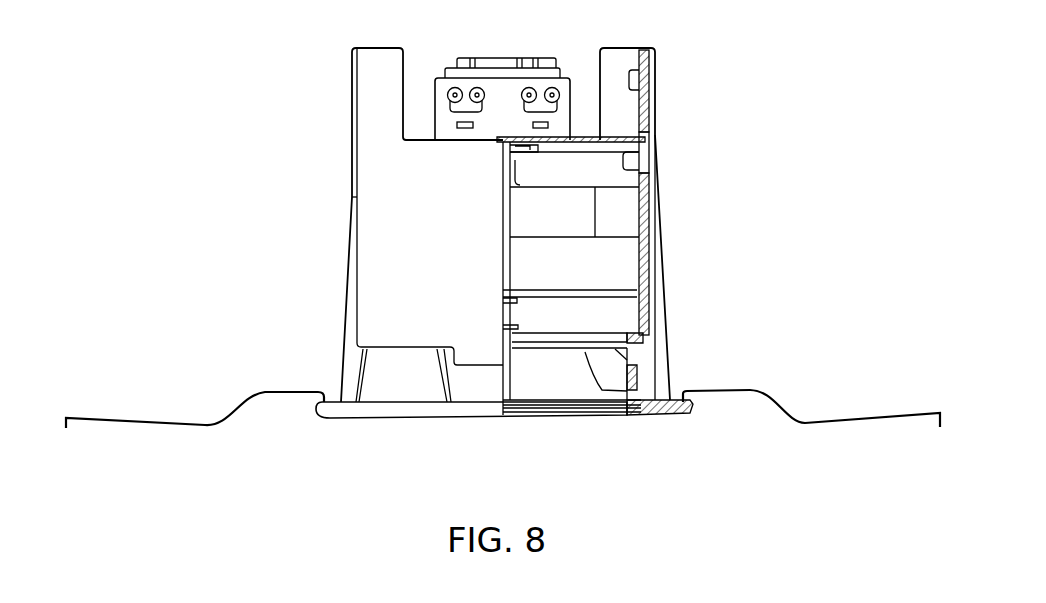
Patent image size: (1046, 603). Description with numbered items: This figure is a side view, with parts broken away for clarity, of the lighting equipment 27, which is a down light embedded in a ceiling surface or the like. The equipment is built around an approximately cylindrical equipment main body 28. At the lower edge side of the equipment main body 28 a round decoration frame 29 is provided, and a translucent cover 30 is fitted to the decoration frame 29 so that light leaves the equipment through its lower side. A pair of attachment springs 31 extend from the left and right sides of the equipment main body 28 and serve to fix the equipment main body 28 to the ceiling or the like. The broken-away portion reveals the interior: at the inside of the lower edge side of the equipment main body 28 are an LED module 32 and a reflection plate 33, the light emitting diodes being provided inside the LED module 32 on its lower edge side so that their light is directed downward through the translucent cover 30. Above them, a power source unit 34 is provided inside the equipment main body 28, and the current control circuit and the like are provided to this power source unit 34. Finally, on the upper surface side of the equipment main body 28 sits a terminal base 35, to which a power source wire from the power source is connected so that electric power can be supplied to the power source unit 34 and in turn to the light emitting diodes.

The lighting equipment 27 is at (720, 84).
The equipment main body 28 is at (352, 163).
The decoration frame 29 is at (431, 414).
The translucent cover 30 is at (541, 414).
The attachment springs 31 is at (137, 418).
The LED module 32 is at (630, 371).
The reflection plate 33 is at (564, 390).
The power source unit 34 is at (625, 263).
The terminal base 35 is at (550, 70).